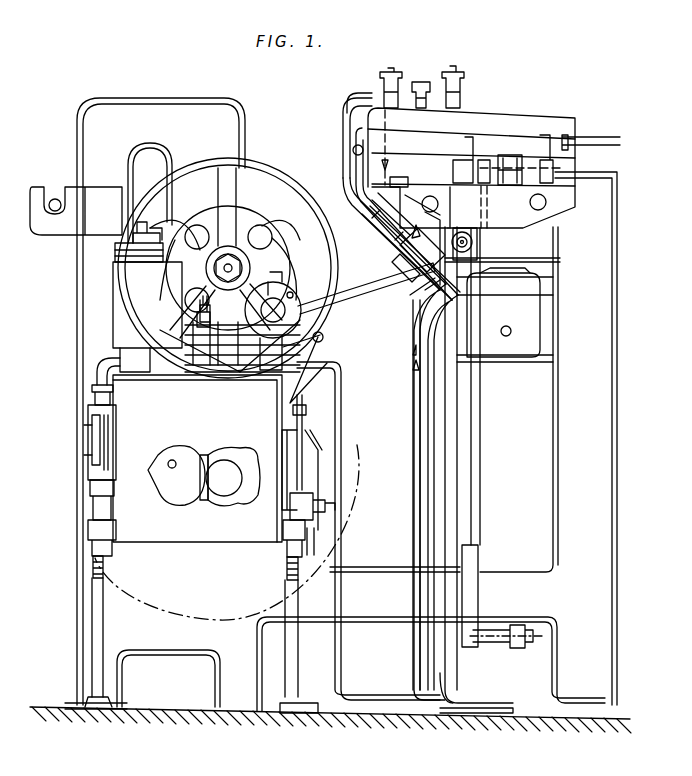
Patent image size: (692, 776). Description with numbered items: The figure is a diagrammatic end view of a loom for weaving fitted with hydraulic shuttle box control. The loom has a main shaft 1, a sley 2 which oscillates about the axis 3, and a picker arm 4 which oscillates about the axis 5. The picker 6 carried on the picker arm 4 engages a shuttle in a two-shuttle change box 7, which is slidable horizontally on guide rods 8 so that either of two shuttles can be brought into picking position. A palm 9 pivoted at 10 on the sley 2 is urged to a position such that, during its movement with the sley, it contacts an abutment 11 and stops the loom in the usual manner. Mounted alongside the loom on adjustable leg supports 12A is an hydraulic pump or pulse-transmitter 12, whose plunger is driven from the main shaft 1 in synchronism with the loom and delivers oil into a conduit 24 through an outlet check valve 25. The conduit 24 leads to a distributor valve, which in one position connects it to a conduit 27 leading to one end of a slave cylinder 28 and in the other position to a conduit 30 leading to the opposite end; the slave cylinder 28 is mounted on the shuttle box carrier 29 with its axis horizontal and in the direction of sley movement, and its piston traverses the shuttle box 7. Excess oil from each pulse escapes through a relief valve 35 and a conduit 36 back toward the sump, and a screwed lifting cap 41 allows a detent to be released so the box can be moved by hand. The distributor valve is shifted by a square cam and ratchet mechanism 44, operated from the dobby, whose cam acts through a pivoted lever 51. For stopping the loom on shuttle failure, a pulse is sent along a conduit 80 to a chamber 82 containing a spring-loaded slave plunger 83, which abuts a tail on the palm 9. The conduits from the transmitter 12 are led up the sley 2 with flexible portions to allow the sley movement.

The main shaft 1 is at (220, 487).
The sley 2 is at (447, 450).
The axis 3 is at (452, 681).
The picker arm 4 is at (481, 396).
The axis 5 is at (530, 633).
The picker 6 is at (570, 164).
The two-shuttle change box 7 is at (507, 155).
The guide rods 8 is at (586, 138).
The palm 9 is at (520, 259).
The pivot 10 is at (475, 242).
The abutment 11 is at (535, 279).
The hydraulic pump or pulse-transmitter 12 is at (171, 547).
The adjustable leg supports 12A is at (95, 572).
The conduit 24 is at (100, 372).
The outlet check valve 25 is at (100, 405).
The conduit 27 is at (356, 143).
The slave cylinder 28 is at (350, 96).
The shuttle box carrier 29 is at (479, 114).
The conduit 30 is at (345, 112).
The relief valve 35 is at (420, 82).
The conduit 36 is at (388, 183).
The screwed lifting cap 41 is at (389, 72).
The square cam and ratchet mechanism 44 is at (320, 298).
The pivoted lever 51 is at (200, 313).
The conduit 80 is at (413, 456).
The chamber 82 is at (368, 206).
The spring-loaded slave plunger 83 is at (390, 253).